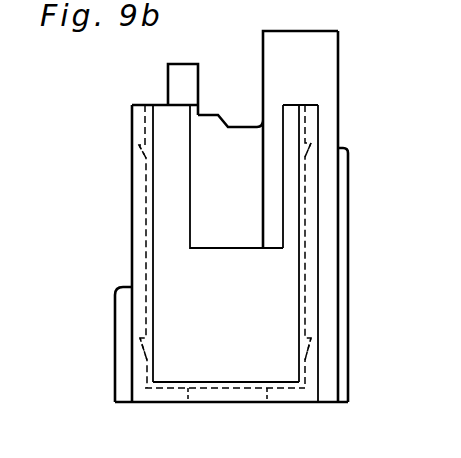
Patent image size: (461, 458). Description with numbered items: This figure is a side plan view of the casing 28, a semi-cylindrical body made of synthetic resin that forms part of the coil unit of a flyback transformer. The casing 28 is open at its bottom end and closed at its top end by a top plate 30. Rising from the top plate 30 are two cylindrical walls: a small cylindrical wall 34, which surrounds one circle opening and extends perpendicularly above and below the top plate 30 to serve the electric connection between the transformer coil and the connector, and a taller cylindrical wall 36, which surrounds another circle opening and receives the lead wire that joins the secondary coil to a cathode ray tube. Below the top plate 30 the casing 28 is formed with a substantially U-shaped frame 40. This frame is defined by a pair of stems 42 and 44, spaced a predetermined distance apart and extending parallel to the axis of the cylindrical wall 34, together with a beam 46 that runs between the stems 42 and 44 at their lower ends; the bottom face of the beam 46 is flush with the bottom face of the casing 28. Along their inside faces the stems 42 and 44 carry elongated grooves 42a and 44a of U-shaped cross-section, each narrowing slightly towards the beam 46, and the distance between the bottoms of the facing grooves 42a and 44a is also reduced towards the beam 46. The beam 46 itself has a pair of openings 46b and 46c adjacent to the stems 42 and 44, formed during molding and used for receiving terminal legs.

The casing 28 is at (128, 200).
The top plate 30 is at (217, 110).
The cylindrical wall 34 is at (178, 88).
The cylindrical wall 36 is at (330, 63).
The U-shaped frame 40 is at (132, 245).
The stem 42 is at (135, 128).
The elongated groove 42a is at (148, 296).
The stem 44 is at (312, 127).
The elongated groove 44a is at (305, 272).
The beam 46 is at (232, 382).
The opening 46b is at (168, 396).
The opening 46c is at (285, 396).